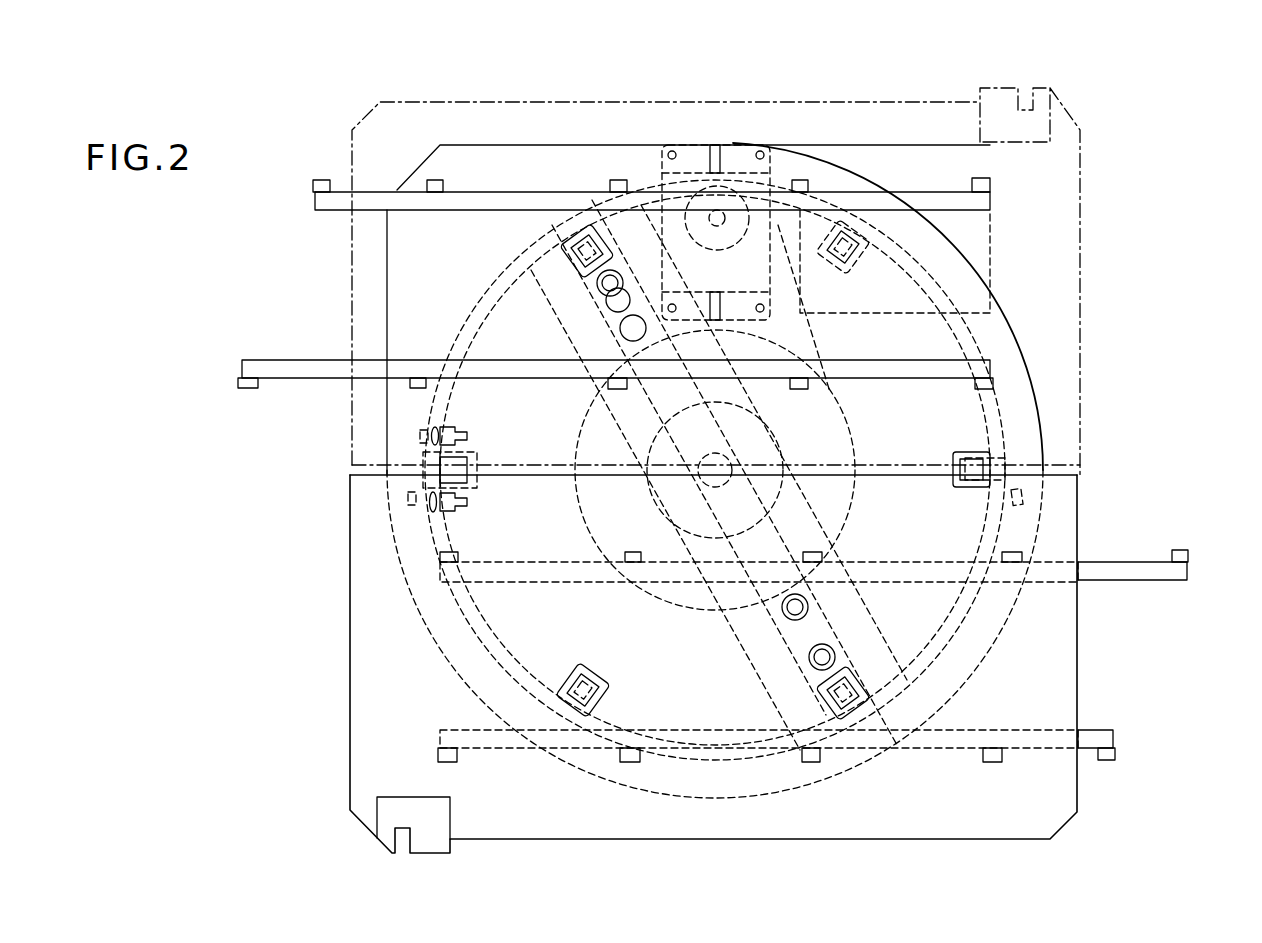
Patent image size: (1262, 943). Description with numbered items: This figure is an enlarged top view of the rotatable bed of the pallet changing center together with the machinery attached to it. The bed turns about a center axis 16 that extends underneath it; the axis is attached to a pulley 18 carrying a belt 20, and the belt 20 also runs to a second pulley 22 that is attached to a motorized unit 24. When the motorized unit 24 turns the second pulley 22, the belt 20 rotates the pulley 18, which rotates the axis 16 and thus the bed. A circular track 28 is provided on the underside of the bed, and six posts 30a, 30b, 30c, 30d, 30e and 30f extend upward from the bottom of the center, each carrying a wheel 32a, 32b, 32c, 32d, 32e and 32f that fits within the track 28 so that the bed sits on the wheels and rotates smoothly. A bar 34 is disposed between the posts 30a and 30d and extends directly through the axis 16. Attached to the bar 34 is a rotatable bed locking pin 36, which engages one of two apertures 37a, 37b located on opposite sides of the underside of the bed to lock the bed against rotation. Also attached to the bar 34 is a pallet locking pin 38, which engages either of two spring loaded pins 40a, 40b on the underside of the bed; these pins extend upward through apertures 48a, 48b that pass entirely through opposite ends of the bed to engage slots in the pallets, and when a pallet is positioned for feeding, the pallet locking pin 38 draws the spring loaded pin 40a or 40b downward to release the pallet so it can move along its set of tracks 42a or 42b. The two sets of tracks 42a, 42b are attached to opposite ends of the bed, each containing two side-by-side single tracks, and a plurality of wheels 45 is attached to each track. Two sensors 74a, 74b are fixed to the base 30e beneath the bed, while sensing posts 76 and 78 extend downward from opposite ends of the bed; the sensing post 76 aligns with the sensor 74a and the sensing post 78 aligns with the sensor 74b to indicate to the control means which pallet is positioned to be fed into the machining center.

The center axis 16 is at (707, 470).
The pulley 18 is at (627, 523).
The belt 20 is at (810, 342).
The second pulley 22 is at (735, 223).
The motorized unit 24 is at (740, 267).
The circular track 28 is at (957, 617).
The post 30a is at (827, 705).
The post 30b is at (977, 457).
The post 30c is at (857, 253).
The post 30d is at (595, 243).
The post 30e is at (440, 458).
The post 30f is at (600, 707).
The wheel 32a is at (863, 717).
The wheel 32b is at (1000, 473).
The wheel 32c is at (857, 223).
The wheel 32d is at (570, 223).
The wheel 32e is at (423, 470).
The wheel 32f is at (557, 712).
The bar 34 is at (793, 690).
The rotatable bed locking pin 36 is at (790, 612).
The aperture 37a is at (637, 333).
The aperture 37b is at (808, 610).
The pallet locking pin 38 is at (617, 307).
The spring loaded pin 40a is at (602, 287).
The spring loaded pin 40b is at (810, 655).
The set of tracks 42a is at (242, 360).
The set of tracks 42b is at (1113, 735).
The wheels 45 is at (247, 390).
The aperture 48a is at (593, 280).
The aperture 48b is at (833, 657).
The sensor 74a is at (450, 505).
The sensor 74b is at (447, 437).
The sensing post 76 is at (410, 502).
The sensing post 78 is at (1023, 502).